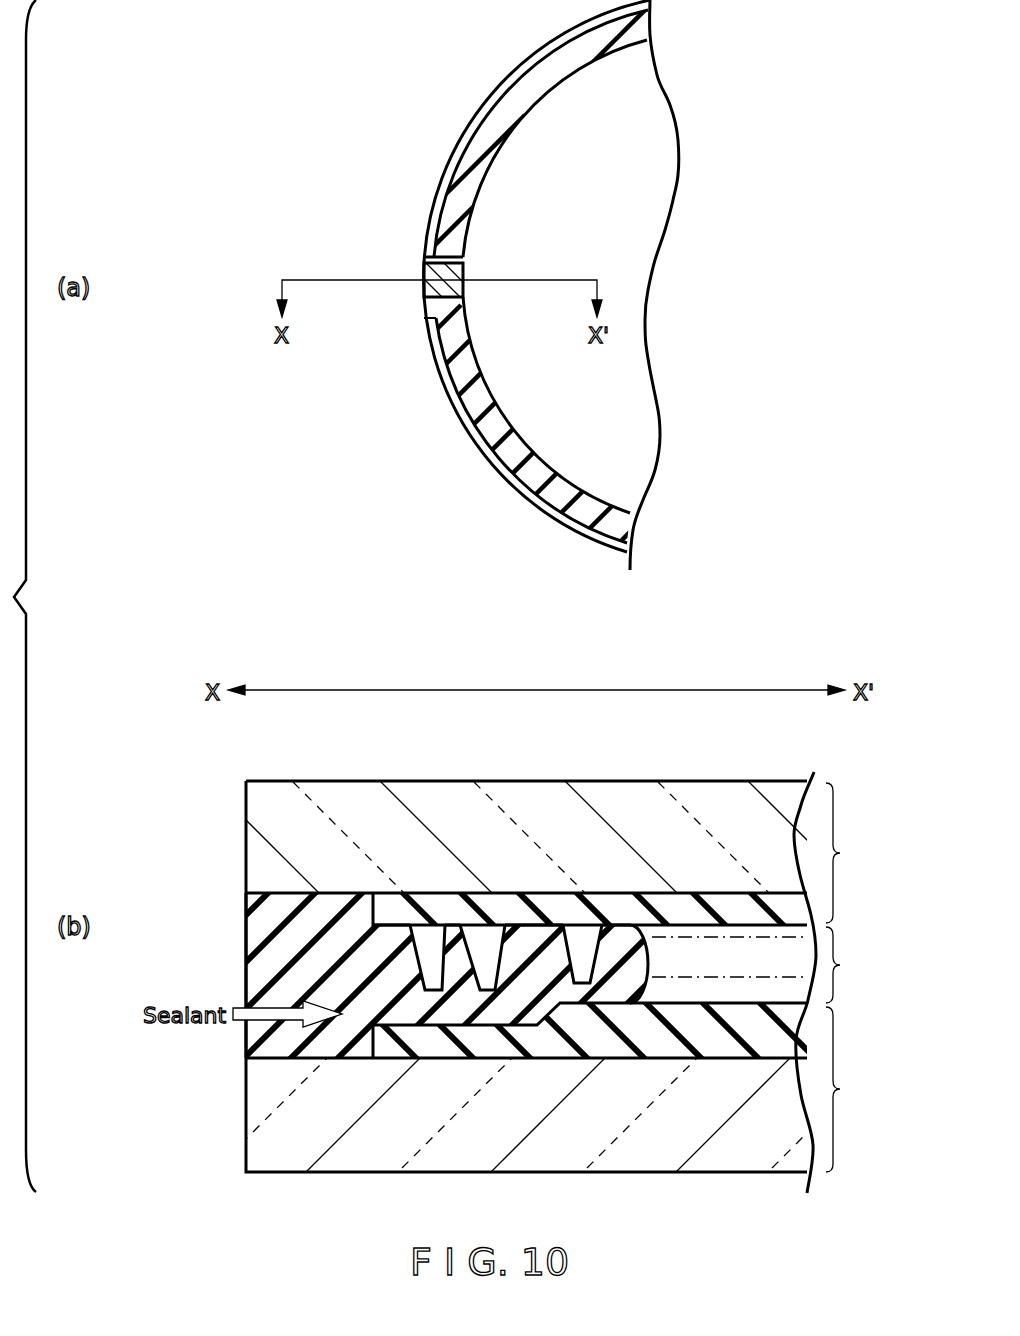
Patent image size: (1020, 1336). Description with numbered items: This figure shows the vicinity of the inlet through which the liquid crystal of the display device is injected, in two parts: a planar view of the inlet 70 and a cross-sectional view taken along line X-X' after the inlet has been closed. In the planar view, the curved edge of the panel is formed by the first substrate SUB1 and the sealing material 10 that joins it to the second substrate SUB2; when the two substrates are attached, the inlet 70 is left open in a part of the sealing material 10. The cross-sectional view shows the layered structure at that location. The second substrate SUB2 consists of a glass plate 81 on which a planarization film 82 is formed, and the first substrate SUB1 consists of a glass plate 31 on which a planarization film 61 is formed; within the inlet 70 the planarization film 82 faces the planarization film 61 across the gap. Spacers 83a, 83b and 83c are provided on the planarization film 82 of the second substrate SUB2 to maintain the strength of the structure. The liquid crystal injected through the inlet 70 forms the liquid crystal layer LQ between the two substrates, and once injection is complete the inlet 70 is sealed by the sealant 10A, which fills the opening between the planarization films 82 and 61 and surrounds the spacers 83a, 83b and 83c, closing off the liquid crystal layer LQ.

The first substrate SUB1 is at (527, 78).
The second substrate SUB2 is at (576, 852).
The liquid crystal layer LQ is at (765, 965).
The sealing material 10 is at (480, 145).
The sealant 10A is at (262, 940).
The inlet 70 is at (424, 270).
The glass plate 81 is at (260, 852).
The planarization film 82 is at (678, 910).
The spacer 83a is at (438, 935).
The spacer 83b is at (482, 935).
The spacer 83c is at (588, 940).
The glass plate 31 is at (260, 1095).
The planarization film 61 is at (655, 1043).